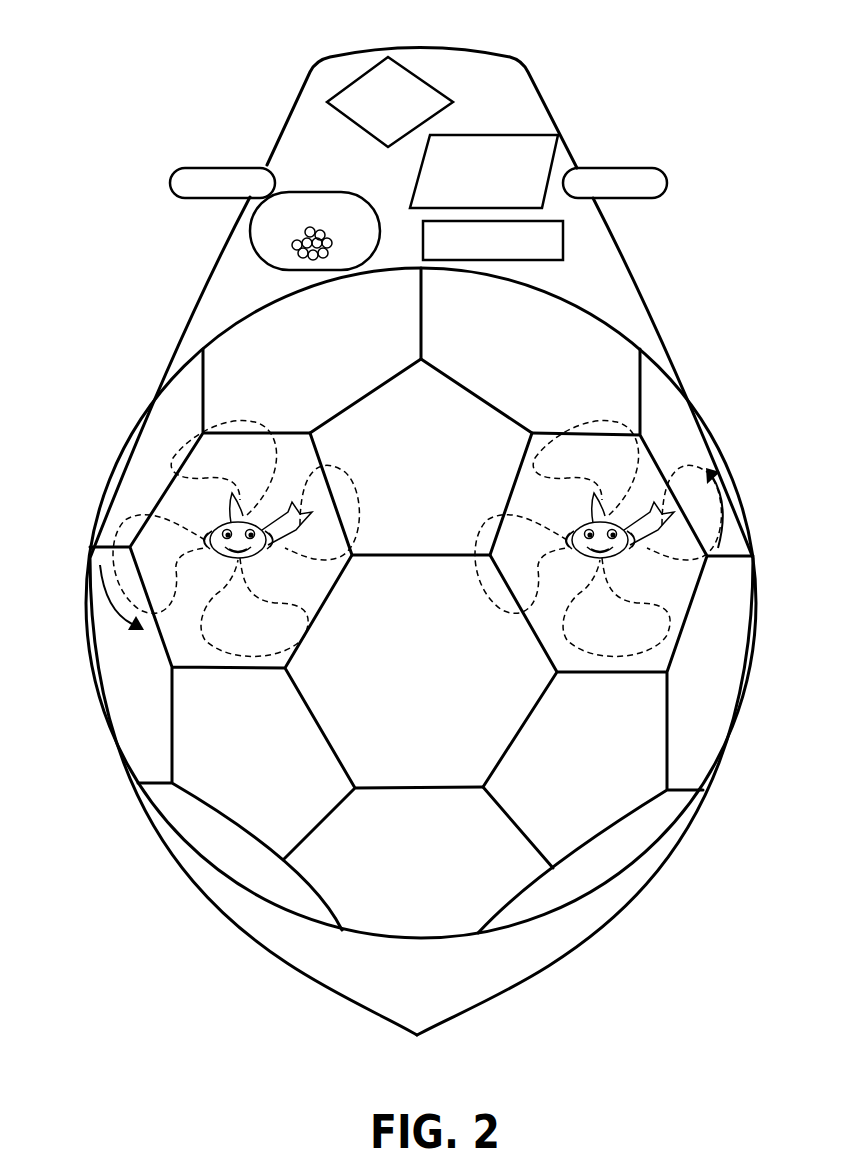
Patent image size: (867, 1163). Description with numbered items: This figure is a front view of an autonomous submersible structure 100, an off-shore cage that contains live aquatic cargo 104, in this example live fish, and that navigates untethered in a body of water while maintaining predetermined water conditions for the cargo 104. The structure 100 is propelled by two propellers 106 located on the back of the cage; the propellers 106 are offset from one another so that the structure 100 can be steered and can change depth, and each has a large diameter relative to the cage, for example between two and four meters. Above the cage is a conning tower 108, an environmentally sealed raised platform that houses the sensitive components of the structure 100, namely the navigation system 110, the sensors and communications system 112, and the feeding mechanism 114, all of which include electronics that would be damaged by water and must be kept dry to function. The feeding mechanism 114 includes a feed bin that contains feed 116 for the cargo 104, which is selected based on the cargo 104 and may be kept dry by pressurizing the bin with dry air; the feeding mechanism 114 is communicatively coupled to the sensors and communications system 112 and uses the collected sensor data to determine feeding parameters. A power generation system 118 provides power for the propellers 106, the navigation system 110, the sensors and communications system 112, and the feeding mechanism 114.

The autonomous submersible structure 100 is at (152, 190).
The cargo 104 is at (227, 522).
The propellers 106 is at (93, 546).
The conning tower 108 is at (655, 322).
The navigation system 110 is at (563, 250).
The sensors and communications system 112 is at (334, 95).
The feeding mechanism 114 is at (275, 185).
The feed 116 is at (295, 248).
The power generation system 118 is at (523, 137).